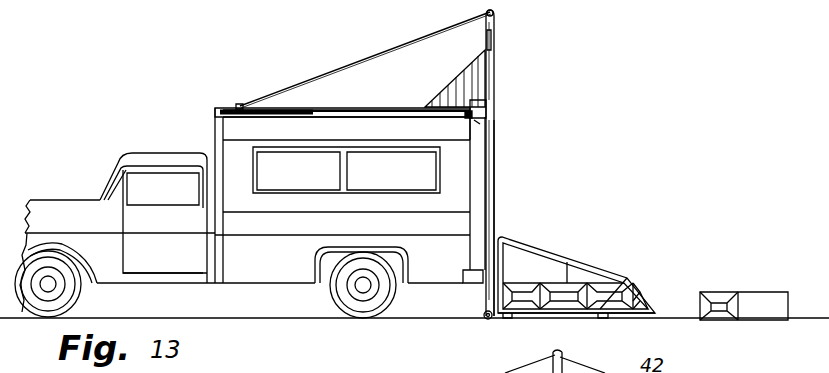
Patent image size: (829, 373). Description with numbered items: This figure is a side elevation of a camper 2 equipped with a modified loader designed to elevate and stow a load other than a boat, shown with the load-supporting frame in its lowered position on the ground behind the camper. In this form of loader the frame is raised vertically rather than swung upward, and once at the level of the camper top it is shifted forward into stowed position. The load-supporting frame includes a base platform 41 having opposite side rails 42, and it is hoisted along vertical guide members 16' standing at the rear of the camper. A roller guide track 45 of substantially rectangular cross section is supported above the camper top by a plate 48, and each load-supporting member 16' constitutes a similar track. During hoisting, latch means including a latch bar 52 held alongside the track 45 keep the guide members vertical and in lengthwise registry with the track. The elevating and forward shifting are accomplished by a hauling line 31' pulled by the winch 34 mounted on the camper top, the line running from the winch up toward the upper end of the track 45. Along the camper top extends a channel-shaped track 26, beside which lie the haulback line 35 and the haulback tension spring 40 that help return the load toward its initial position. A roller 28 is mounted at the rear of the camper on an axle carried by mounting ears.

The camper 2 is at (215, 128).
The channel-shaped track 26 is at (374, 110).
The haulback line 35 is at (358, 118).
The haulback tension spring 40 is at (262, 119).
The hoisting line winch 34 is at (241, 106).
The hauling line 31' is at (365, 60).
The roller guide track 45 is at (495, 47).
The latch bar 52 is at (485, 43).
The plate 48 is at (460, 79).
The roller 28 is at (495, 113).
The load-supporting member 16' is at (511, 219).
The side rail 42 is at (585, 262).
The base platform 41 is at (585, 314).